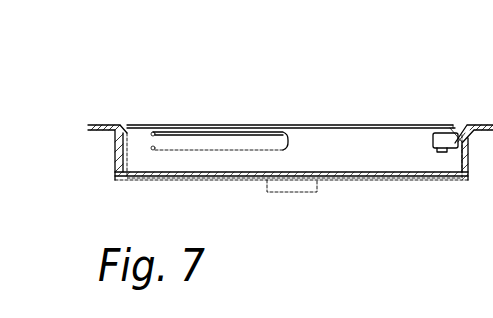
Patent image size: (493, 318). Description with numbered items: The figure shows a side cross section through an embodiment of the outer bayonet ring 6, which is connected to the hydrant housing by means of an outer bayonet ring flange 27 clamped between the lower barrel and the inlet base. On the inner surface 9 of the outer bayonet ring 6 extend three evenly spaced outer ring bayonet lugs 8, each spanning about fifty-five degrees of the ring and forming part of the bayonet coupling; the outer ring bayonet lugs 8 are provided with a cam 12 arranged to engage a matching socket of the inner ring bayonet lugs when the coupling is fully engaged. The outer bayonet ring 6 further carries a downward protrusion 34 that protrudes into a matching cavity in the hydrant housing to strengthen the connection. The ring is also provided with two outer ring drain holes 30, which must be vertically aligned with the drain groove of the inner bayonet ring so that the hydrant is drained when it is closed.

The outer bayonet ring 6 is at (483, 127).
The outer bayonet ring flange 27 is at (456, 133).
The outer ring bayonet lugs 8 is at (210, 143).
The inner surface 9 is at (323, 150).
The cam 12 is at (160, 150).
The outer ring drain holes 30 is at (463, 174).
The downward protrusion 34 is at (288, 186).